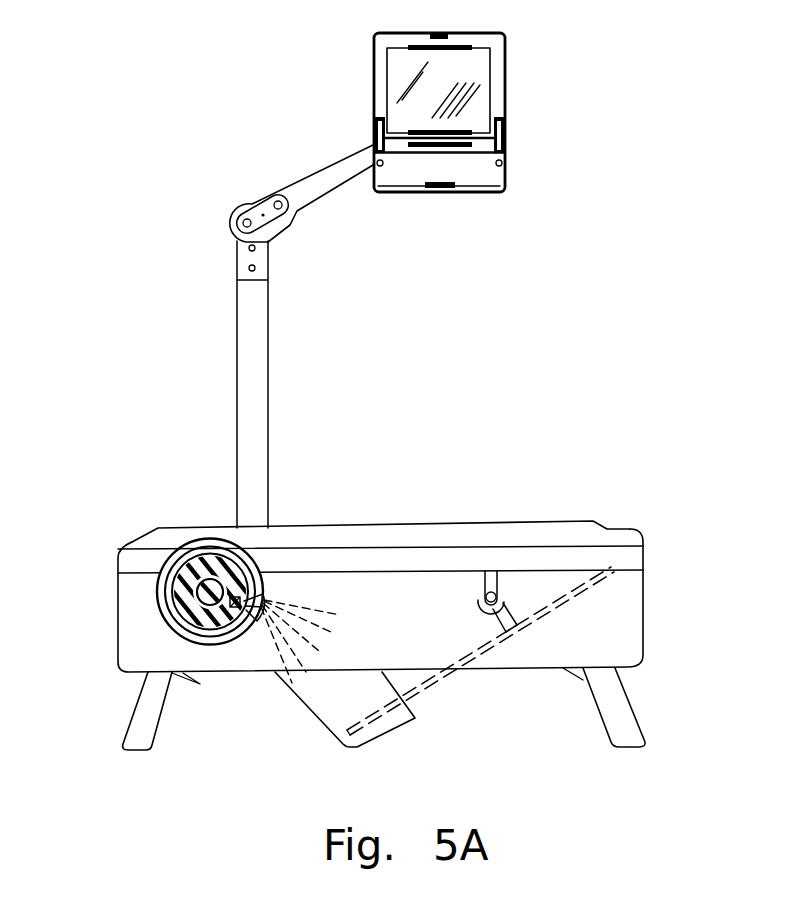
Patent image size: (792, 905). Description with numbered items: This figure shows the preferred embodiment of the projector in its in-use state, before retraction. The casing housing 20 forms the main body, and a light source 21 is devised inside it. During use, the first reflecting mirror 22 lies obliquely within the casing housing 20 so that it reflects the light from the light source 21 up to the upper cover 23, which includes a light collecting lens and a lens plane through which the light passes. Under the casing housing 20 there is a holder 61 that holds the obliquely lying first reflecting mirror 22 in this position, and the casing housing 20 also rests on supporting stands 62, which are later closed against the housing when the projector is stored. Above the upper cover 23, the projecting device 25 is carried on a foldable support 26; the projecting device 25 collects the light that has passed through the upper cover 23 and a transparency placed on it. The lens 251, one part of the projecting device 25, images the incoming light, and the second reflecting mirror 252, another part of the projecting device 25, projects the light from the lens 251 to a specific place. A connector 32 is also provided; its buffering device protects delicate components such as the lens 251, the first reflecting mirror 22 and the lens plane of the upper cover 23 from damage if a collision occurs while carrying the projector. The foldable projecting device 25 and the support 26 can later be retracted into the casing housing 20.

The casing housing 20 is at (117, 619).
The light source 21 is at (248, 622).
The first reflecting mirror 22 is at (550, 607).
The upper cover 23 is at (497, 523).
The projecting device 25 is at (491, 101).
The lens 251 is at (487, 172).
The second reflecting mirror 252 is at (478, 97).
The foldable support 26 is at (303, 178).
The connector 32 is at (477, 601).
The holder 61 is at (303, 701).
The supporting stands 62 is at (637, 717).